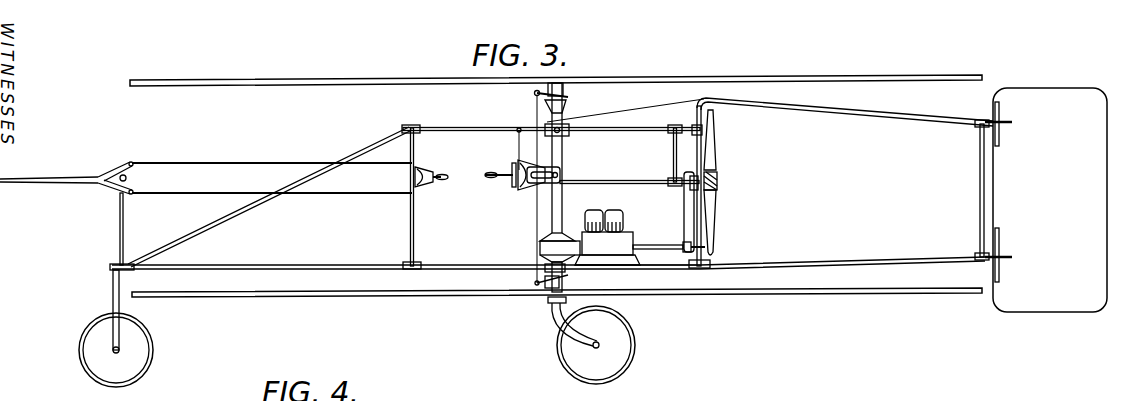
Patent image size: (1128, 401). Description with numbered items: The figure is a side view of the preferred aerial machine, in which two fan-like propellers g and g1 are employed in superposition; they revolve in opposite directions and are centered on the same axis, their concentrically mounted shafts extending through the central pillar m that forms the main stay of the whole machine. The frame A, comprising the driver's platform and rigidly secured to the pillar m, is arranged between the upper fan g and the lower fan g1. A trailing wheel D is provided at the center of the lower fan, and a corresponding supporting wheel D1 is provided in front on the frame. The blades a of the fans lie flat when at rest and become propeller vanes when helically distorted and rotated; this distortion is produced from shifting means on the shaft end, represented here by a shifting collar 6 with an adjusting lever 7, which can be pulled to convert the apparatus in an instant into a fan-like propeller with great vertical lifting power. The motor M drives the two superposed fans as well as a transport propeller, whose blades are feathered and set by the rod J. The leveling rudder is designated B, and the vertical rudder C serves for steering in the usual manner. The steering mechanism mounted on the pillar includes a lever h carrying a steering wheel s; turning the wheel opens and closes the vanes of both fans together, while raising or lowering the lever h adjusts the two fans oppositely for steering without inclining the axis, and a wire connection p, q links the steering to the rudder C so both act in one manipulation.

The upper fan-like propeller g is at (215, 86).
The lower fan-like propeller g1 is at (937, 293).
The frame of the aerial machine A is at (355, 263).
The leveling rudder B is at (60, 181).
The supporting wheel D1 is at (143, 356).
The trailing wheel D is at (614, 343).
The central pillar m is at (563, 152).
The shifting collar 6 is at (566, 102).
The adjusting lever 7 is at (534, 94).
The wire connection p is at (608, 113).
The steering wheel s is at (520, 167).
The steering lever h is at (498, 178).
The rod J is at (626, 181).
The motor M is at (625, 240).
The wire connection q is at (655, 270).
The blades a is at (714, 135).
The vertical rudder C is at (1046, 200).